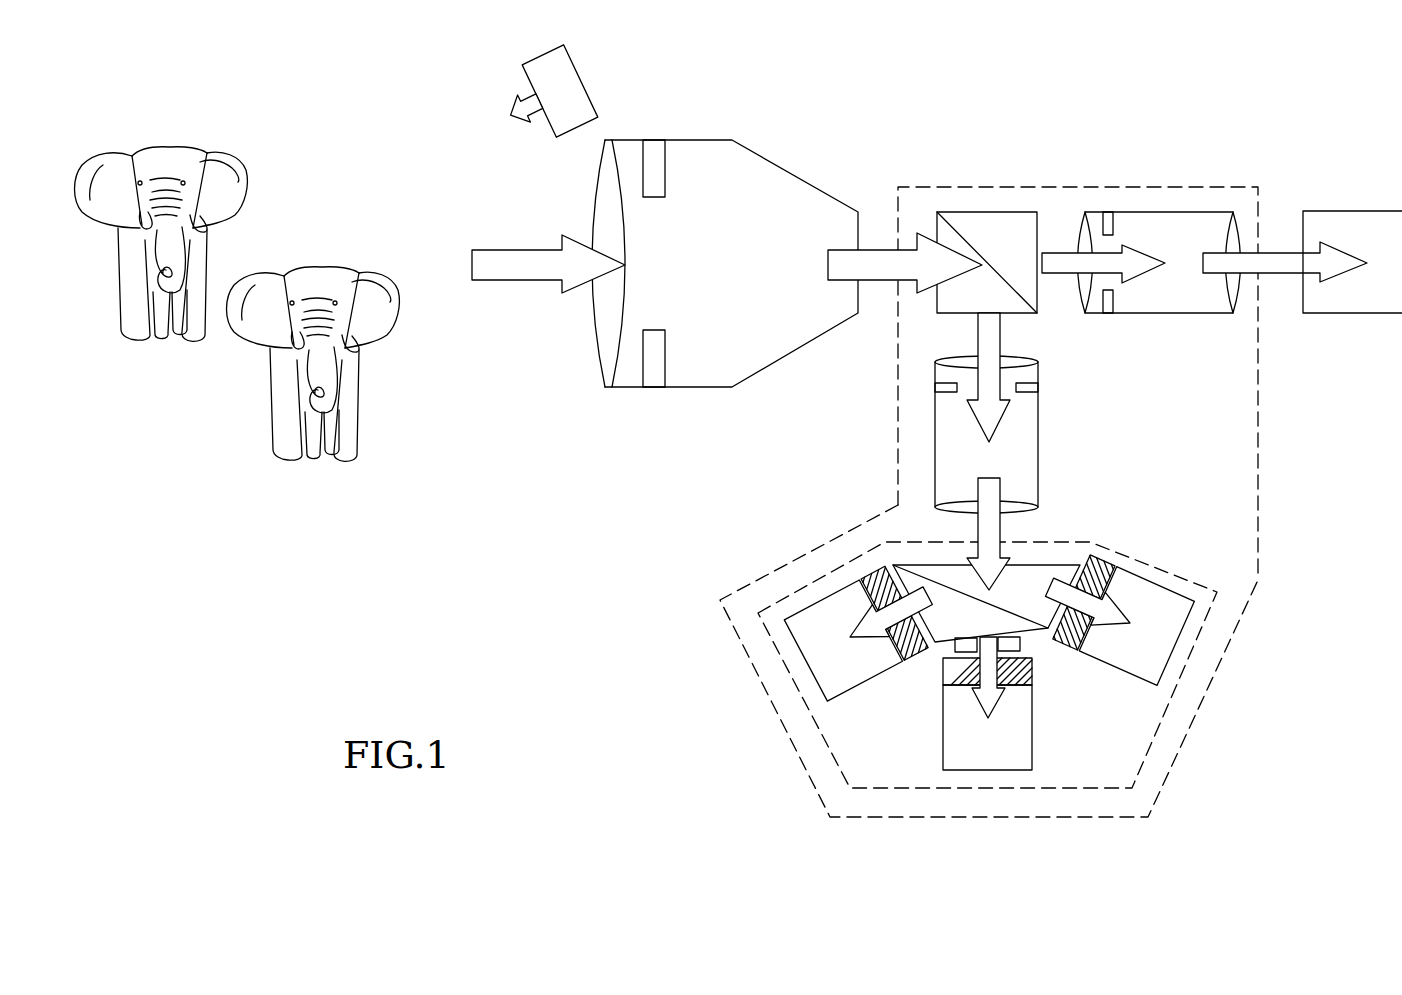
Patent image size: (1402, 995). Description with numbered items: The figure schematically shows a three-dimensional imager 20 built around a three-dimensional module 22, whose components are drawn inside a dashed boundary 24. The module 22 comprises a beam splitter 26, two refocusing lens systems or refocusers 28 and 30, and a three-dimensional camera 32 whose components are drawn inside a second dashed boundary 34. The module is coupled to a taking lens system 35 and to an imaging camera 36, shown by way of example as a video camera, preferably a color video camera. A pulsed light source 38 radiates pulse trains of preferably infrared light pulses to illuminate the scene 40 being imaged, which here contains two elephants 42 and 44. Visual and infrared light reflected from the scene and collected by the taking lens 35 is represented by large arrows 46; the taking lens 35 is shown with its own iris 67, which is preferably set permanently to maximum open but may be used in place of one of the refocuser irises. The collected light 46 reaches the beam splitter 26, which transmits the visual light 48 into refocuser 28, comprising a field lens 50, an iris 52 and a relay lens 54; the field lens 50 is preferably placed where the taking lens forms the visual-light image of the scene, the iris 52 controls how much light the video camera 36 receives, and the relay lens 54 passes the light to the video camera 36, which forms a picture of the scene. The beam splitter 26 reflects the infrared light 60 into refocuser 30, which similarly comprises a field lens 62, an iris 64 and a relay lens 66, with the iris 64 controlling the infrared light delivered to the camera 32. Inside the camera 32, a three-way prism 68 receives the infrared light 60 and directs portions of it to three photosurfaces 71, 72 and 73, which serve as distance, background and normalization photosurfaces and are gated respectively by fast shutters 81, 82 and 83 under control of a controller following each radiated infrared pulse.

The 3D imager 20 is at (338, 75).
The 3D module 22 is at (888, 130).
The dashed boundary 24 is at (1003, 187).
The beam splitter 26 is at (1015, 275).
The refocusing lens system 28 is at (1163, 305).
The refocusing lens system 30 is at (1020, 447).
The 3D camera 32 is at (1202, 572).
The dashed boundary 34 is at (1153, 563).
The taking lens system 35 is at (722, 323).
The imaging camera 36 is at (1359, 248).
The pulsed light source 38 is at (572, 101).
The scene 40 is at (230, 487).
The elephant 42 is at (355, 443).
The elephant 44 is at (152, 340).
The collected light 46 is at (512, 262).
The visual light 48 is at (1060, 262).
The field lens 50 is at (1082, 230).
The iris 52 is at (1113, 298).
The relay lens 54 is at (1238, 233).
The IR light 60 is at (963, 367).
The field lens 62 is at (935, 360).
The iris 64 is at (943, 390).
The relay lens 66 is at (1038, 506).
The iris 67 is at (652, 337).
The three-way prism 68 is at (1047, 570).
The photosurface 71 is at (813, 642).
The photosurface 72 is at (1003, 752).
The photosurface 73 is at (1160, 648).
The fast shutter 81 is at (880, 577).
The fast shutter 82 is at (943, 668).
The fast shutter 83 is at (1067, 637).